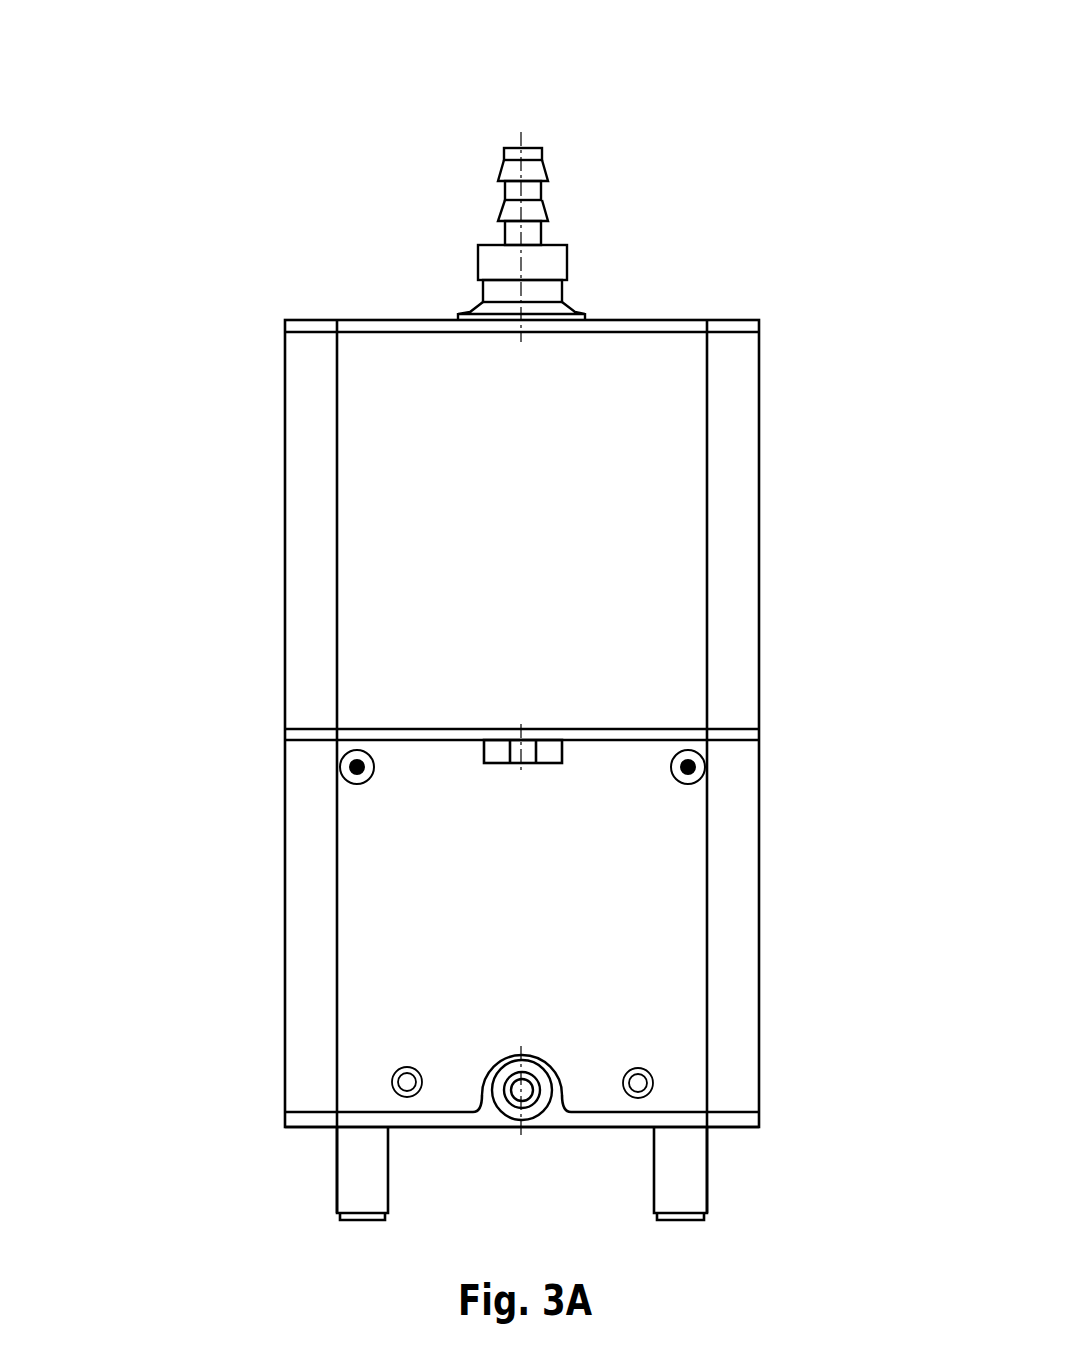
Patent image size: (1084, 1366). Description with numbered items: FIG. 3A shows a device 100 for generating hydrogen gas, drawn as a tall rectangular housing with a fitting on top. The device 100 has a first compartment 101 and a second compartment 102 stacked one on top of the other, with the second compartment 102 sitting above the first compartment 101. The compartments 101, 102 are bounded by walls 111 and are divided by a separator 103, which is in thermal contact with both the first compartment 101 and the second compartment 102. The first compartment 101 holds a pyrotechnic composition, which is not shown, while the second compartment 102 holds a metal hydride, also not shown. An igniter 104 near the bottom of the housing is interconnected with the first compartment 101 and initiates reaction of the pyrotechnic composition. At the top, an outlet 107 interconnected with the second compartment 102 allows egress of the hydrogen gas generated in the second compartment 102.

The device 100 is at (580, 106).
The first compartment 101 is at (413, 823).
The second compartment 102 is at (603, 512).
The separator 103 is at (365, 737).
The igniter 104 is at (530, 1086).
The outlet 107 is at (553, 186).
The walls 111 is at (742, 322).